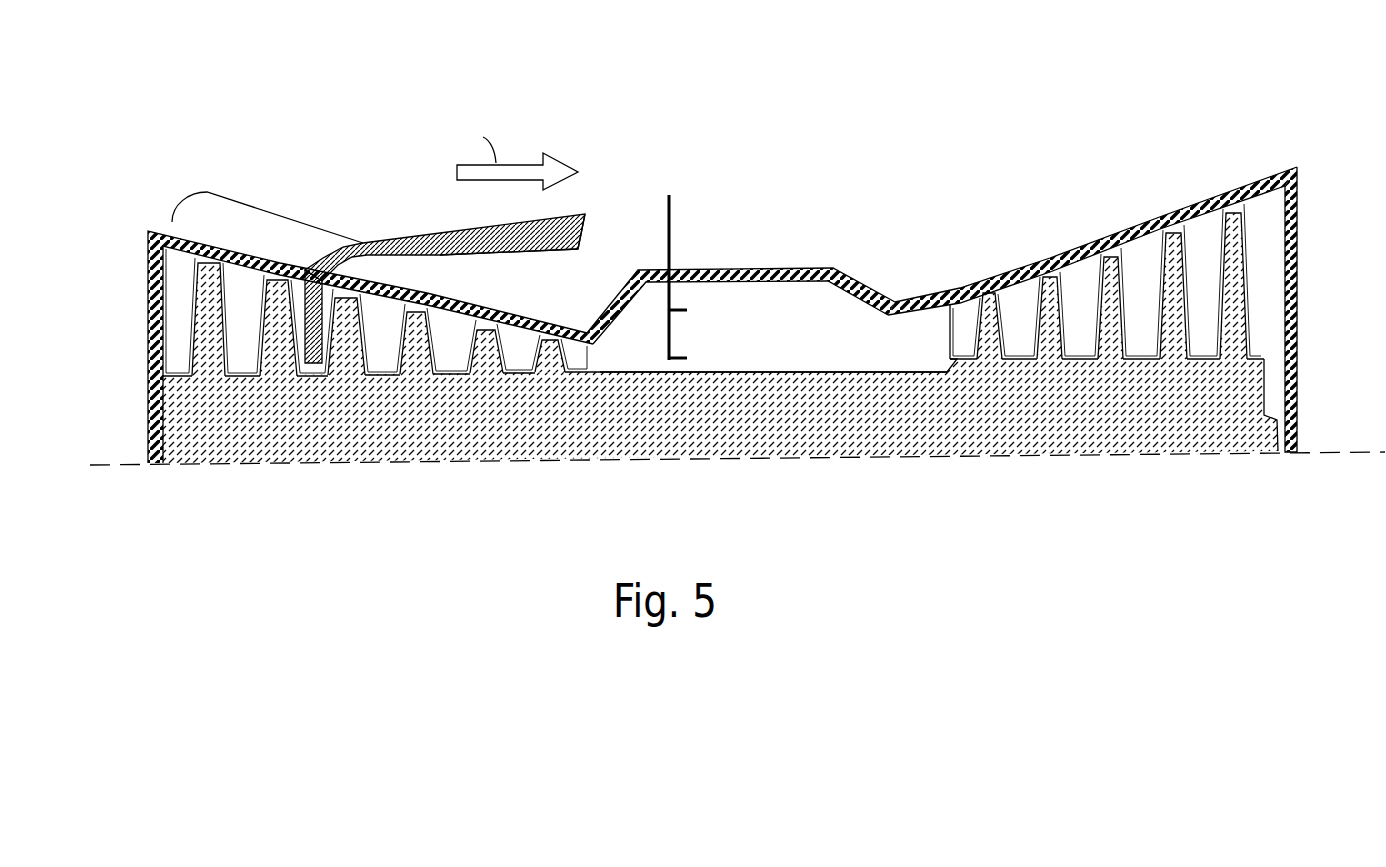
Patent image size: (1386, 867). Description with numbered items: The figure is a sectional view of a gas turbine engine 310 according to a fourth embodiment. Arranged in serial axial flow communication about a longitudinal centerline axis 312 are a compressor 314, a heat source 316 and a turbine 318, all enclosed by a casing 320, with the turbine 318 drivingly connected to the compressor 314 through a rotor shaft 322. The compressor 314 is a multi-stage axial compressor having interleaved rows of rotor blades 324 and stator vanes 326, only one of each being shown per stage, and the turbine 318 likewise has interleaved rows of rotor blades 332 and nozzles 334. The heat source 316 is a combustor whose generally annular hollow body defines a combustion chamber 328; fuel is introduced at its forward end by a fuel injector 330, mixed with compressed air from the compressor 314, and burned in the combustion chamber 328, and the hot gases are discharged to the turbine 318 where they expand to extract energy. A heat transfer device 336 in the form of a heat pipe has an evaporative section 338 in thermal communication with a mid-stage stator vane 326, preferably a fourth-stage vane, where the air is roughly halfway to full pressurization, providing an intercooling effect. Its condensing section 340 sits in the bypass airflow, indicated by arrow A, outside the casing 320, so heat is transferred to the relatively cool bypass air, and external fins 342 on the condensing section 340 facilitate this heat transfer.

The gas turbine engine 310 is at (548, 92).
The longitudinal centerline axis 312 is at (1340, 450).
The compressor 314 is at (387, 239).
The heat source 316 is at (878, 243).
The turbine 318 is at (1283, 165).
The casing 320 is at (1298, 297).
The rotor shaft 322 is at (653, 445).
The rotor blades 324 is at (212, 272).
The stator vanes 326 is at (173, 307).
The combustion chamber 328 is at (787, 333).
The fuel injector 330 is at (670, 213).
The rotor blades 332 is at (990, 293).
The nozzles 334 is at (963, 313).
The heat transfer device 336 is at (362, 242).
The evaporative section 338 is at (327, 373).
The condensing section 340 is at (550, 252).
The external fins 342 is at (567, 214).